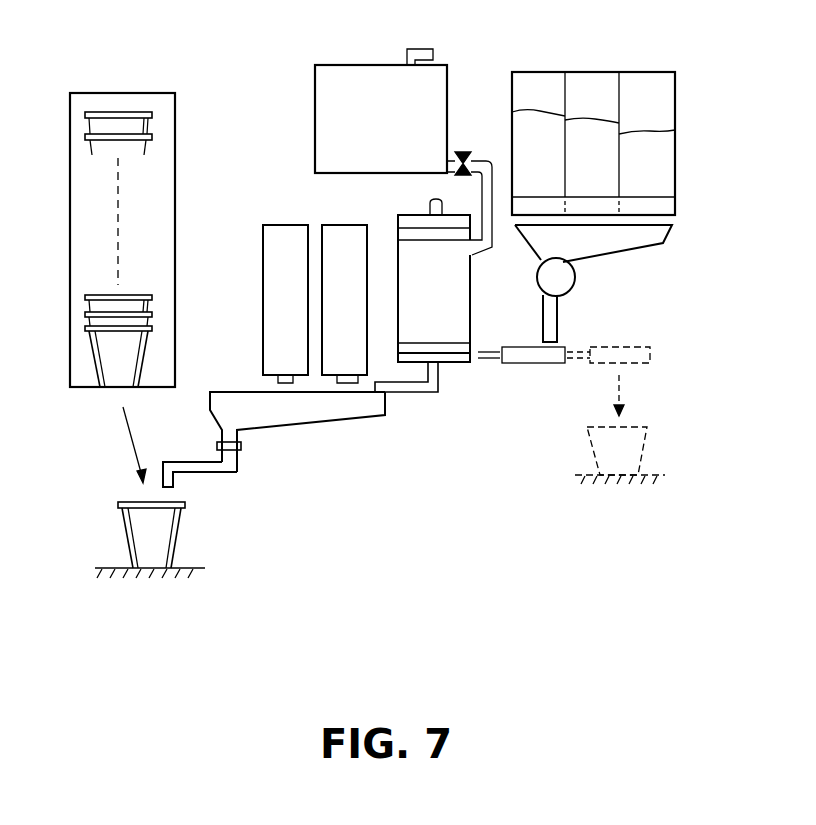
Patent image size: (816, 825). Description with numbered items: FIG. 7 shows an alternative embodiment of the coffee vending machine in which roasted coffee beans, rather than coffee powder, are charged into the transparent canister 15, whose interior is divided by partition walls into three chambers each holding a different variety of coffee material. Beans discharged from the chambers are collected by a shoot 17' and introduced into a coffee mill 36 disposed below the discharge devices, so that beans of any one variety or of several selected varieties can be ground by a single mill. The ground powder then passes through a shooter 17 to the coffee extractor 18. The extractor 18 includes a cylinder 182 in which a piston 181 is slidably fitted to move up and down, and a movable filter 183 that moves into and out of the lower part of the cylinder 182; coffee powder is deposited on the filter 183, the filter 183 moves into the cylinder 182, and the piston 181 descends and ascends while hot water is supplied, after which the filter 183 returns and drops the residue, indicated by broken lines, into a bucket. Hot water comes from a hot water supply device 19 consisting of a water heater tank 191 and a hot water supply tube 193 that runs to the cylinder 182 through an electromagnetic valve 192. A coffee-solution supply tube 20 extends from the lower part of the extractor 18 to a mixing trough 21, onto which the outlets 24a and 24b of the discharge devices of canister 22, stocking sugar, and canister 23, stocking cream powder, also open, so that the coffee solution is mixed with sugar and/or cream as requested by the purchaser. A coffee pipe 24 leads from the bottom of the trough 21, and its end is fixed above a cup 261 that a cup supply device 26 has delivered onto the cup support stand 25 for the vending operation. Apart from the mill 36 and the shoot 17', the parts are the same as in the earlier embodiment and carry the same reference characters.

The canister 15 is at (677, 103).
The shooter 17 is at (572, 318).
The shoot 17' is at (603, 250).
The coffee extractor 18 is at (462, 307).
The hot water supply device 19 is at (381, 87).
The coffee-solution supply tube 20 is at (415, 395).
The mixing trough 21 is at (295, 428).
The canister 22 is at (260, 288).
The canister 23 is at (358, 324).
The coffee pipe 24 is at (200, 473).
The outlet 24a is at (276, 379).
The outlet 24b is at (347, 388).
The cup support stand 25 is at (192, 577).
The cup supply device 26 is at (70, 232).
The coffee mill 36 is at (576, 280).
The piston 181 is at (435, 232).
The cylinder 182 is at (470, 313).
The movable filter 183 is at (535, 364).
The water heater tank 191 is at (315, 118).
The electromagnetic valve 192 is at (468, 154).
The hot water supply tube 193 is at (493, 243).
The cup 261 is at (126, 524).